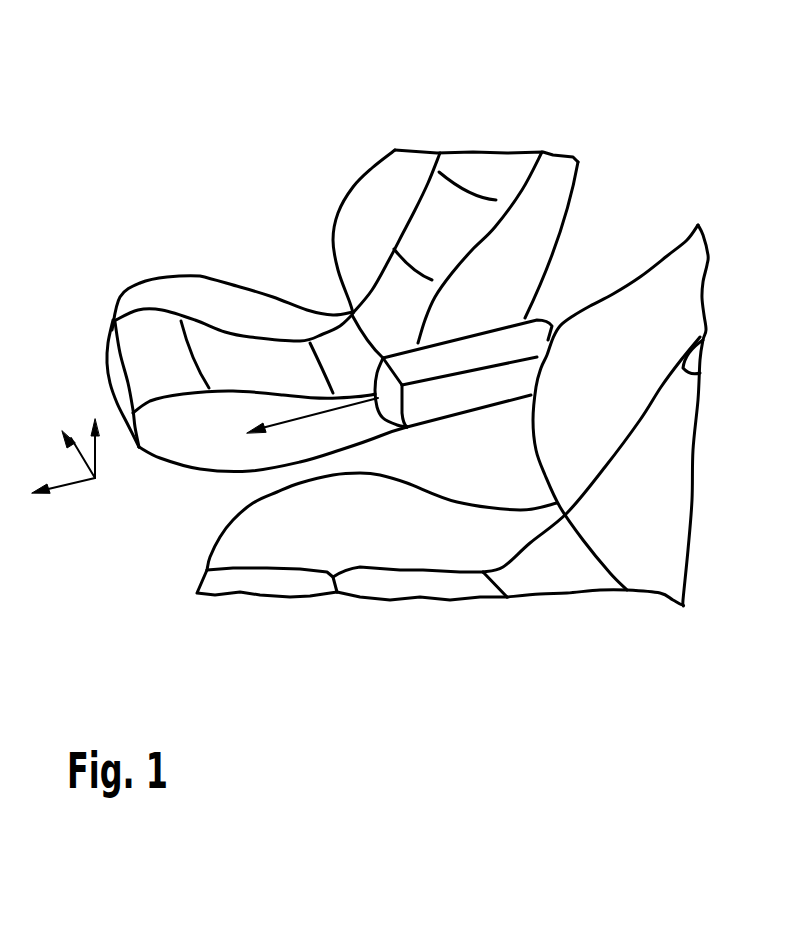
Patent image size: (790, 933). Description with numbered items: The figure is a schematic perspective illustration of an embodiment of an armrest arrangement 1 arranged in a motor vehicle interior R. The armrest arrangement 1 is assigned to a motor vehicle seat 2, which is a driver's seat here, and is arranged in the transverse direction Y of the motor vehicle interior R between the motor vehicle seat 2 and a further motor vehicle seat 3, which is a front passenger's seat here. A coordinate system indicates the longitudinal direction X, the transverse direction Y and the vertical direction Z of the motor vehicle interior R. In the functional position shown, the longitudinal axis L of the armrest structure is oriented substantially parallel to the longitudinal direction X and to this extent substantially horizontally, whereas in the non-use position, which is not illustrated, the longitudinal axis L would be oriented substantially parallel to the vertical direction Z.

The armrest arrangement 1 is at (567, 277).
The motor vehicle seat 2 is at (667, 240).
The further motor vehicle seat 3 is at (517, 132).
The longitudinal axis L is at (340, 411).
The motor vehicle interior R is at (236, 218).
The longitudinal direction X is at (63, 483).
The transverse direction Y is at (78, 452).
The vertical direction Z is at (95, 438).